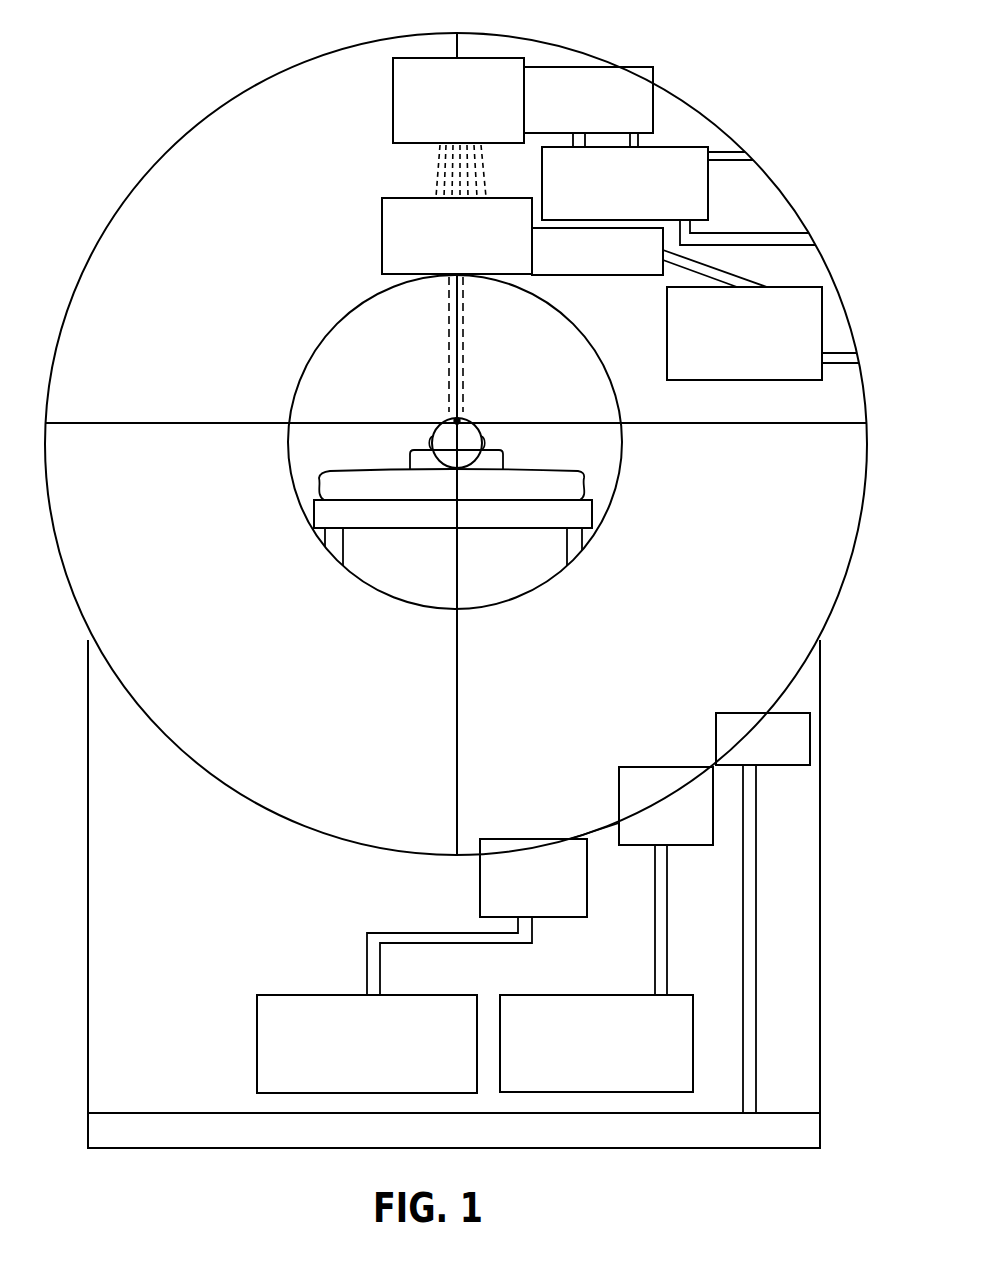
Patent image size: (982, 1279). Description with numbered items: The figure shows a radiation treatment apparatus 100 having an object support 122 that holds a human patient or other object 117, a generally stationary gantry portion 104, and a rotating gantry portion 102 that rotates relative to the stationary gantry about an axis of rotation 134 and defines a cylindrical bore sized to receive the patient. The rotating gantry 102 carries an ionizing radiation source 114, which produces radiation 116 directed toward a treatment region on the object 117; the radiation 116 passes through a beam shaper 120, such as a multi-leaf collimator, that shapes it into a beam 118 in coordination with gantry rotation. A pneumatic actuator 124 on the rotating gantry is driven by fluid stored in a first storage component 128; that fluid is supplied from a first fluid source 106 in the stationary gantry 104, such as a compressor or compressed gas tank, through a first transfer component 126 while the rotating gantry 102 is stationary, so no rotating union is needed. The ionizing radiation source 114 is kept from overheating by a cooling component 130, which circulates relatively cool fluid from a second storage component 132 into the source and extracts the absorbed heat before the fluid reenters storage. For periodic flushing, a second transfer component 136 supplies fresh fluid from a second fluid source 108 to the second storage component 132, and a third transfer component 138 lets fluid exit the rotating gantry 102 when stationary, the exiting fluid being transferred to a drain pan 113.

The radiation treatment apparatus 100 is at (150, 46).
The rotating gantry portion 102 is at (163, 157).
The stationary gantry portion 104 is at (89, 863).
The first fluid source 106 is at (257, 1038).
The second fluid source 108 is at (600, 995).
The drain pan 113 is at (760, 1118).
The ionizing radiation source 114 is at (393, 98).
The radiation 116 is at (436, 173).
The object 117 is at (432, 447).
The beam 118 is at (448, 323).
The beam shaper 120 is at (382, 237).
The object support 122 is at (314, 512).
The pneumatic actuator 124 is at (565, 276).
The first transfer component 126 is at (540, 839).
The first storage component 128 is at (753, 381).
The cooling component 130 is at (653, 108).
The second storage component 132 is at (712, 182).
The axis of rotation 134 is at (460, 421).
The second transfer component 136 is at (665, 767).
The third transfer component 138 is at (760, 713).